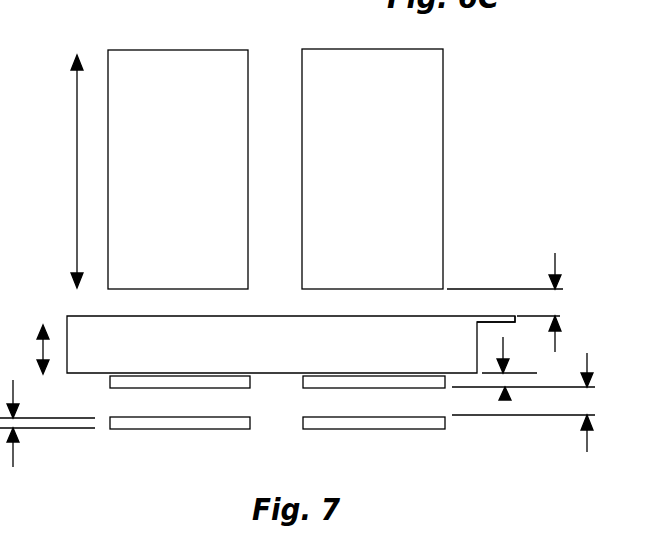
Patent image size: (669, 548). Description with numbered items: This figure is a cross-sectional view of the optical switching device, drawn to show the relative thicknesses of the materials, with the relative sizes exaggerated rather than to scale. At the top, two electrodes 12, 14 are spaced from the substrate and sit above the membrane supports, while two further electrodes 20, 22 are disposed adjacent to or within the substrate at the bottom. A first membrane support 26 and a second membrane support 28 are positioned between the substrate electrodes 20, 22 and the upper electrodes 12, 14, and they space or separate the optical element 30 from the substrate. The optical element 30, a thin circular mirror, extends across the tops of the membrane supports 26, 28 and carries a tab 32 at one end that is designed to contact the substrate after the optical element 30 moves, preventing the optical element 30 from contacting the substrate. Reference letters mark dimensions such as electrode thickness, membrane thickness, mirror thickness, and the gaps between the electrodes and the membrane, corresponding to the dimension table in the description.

The electrode 12 is at (422, 104).
The electrode 14 is at (156, 78).
The electrode 20 is at (352, 420).
The electrode 22 is at (163, 423).
The first membrane support 26 is at (337, 378).
The second membrane support 28 is at (163, 377).
The optical element 30 is at (83, 333).
The tab 32 is at (490, 313).